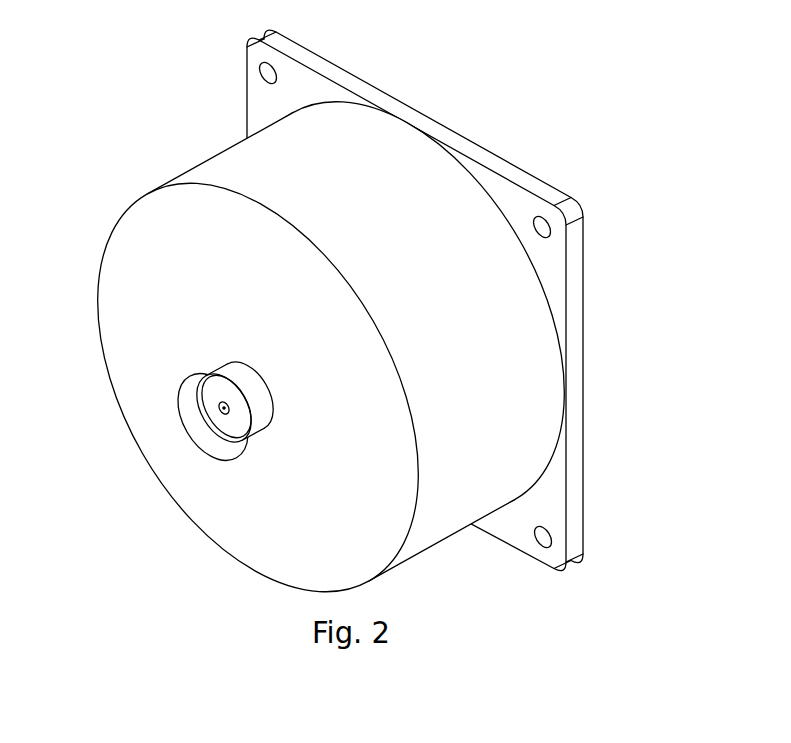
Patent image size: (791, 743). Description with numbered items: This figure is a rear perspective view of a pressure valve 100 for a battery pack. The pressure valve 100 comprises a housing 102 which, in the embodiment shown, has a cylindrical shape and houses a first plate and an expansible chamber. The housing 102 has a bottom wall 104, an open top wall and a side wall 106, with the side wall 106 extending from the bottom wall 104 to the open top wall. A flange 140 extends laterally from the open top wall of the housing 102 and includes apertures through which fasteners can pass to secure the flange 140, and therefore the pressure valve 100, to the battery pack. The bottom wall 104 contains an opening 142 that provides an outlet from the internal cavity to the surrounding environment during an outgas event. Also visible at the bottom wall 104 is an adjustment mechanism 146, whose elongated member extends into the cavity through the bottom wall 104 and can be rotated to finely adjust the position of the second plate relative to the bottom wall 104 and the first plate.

The pressure valve 100 is at (330, 338).
The housing 102 is at (330, 346).
The bottom wall 104 is at (215, 512).
The side wall 106 is at (457, 528).
The flange 140 is at (517, 172).
The opening 142 is at (190, 420).
The adjustment mechanism 146 is at (205, 368).